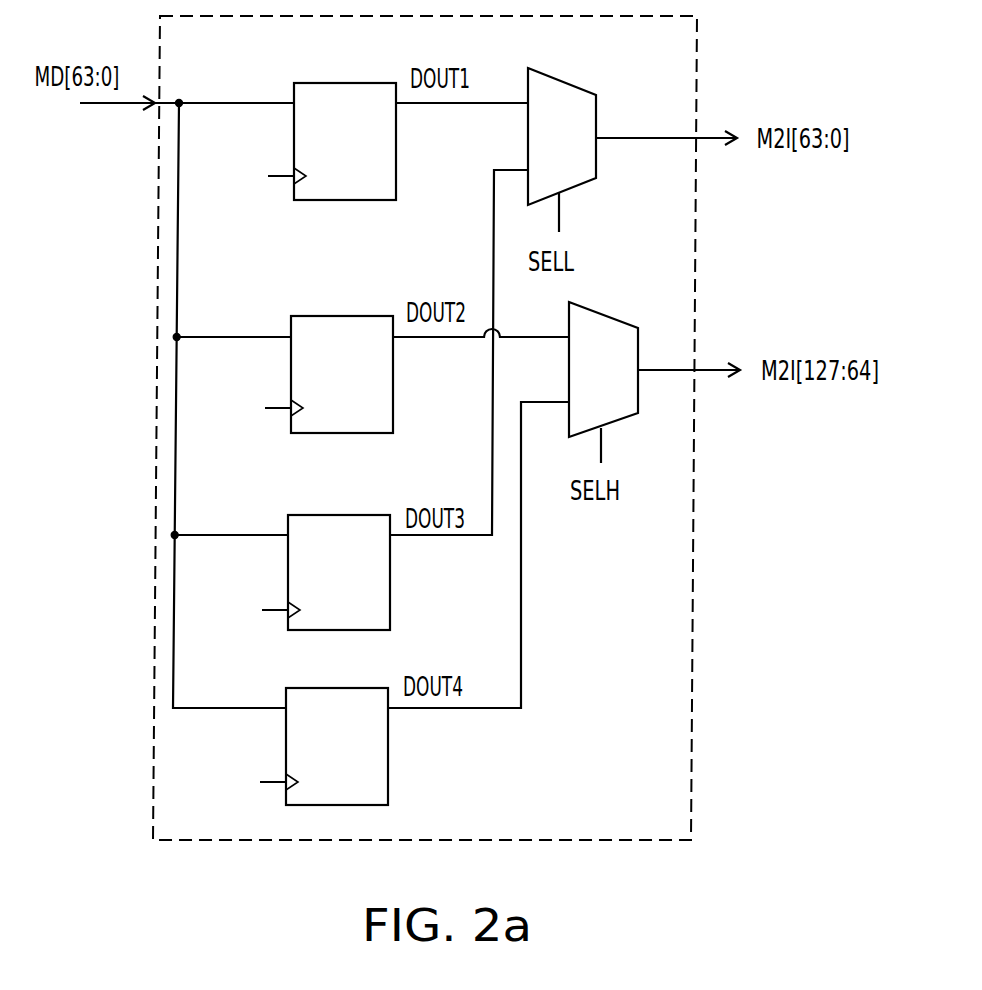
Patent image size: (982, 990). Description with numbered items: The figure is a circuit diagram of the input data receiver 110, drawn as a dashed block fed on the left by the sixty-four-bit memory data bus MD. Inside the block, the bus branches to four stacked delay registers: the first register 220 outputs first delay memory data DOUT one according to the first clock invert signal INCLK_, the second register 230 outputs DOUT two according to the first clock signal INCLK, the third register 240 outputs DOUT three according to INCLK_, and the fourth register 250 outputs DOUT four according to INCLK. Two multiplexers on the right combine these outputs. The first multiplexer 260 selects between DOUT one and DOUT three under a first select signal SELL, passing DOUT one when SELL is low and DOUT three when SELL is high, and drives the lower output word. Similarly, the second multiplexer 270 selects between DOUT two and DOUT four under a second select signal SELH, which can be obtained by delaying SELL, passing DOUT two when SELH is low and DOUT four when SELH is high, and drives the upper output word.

The input data receiver 110 is at (692, 596).
The first register 220 is at (328, 200).
The second register 230 is at (393, 387).
The third register 240 is at (390, 570).
The fourth register 250 is at (388, 748).
The first multiplexer 260 is at (597, 116).
The second multiplexer 270 is at (627, 418).